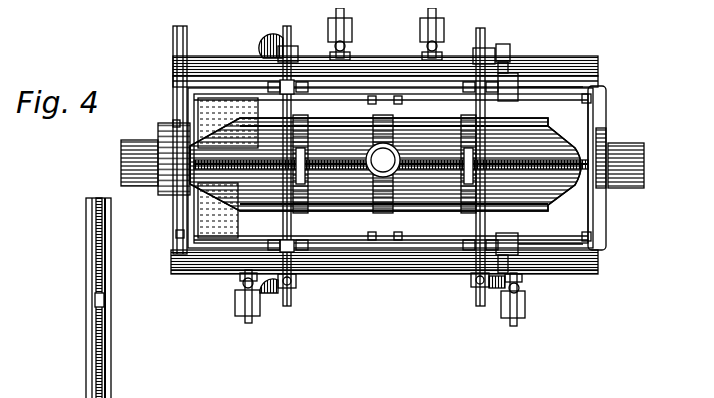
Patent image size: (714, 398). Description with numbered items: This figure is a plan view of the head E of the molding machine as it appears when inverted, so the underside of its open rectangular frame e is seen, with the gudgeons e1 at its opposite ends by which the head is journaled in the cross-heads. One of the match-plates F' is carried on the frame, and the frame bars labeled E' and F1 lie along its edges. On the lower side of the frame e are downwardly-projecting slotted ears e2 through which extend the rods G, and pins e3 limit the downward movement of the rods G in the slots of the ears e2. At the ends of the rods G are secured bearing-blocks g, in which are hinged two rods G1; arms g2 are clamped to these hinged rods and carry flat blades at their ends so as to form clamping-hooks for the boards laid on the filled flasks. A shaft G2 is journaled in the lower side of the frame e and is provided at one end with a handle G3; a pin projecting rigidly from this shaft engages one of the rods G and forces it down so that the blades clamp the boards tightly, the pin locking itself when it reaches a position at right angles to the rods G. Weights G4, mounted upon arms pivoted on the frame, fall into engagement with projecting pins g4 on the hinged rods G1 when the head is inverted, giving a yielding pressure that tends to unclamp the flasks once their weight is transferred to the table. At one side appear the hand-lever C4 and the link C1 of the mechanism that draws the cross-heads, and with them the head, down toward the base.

The open rectangular frame e is at (382, 168).
The gudgeons e1 is at (655, 157).
The slotted ears e2 is at (278, 78).
The pins e3 is at (282, 82).
The head E is at (391, 279).
The frame bar E' is at (391, 280).
The match-plate F' is at (384, 283).
The rail flange F1 is at (415, 257).
The rods G is at (278, 290).
The hinged rods G1 is at (381, 52).
The shaft G2 is at (222, 157).
The handle G3 is at (179, 30).
The weights G4 is at (505, 75).
The bearing-blocks g is at (283, 273).
The arms g2 is at (506, 316).
The projecting pins g4 is at (497, 58).
The hand-lever C4 is at (100, 335).
The link C1 is at (93, 368).